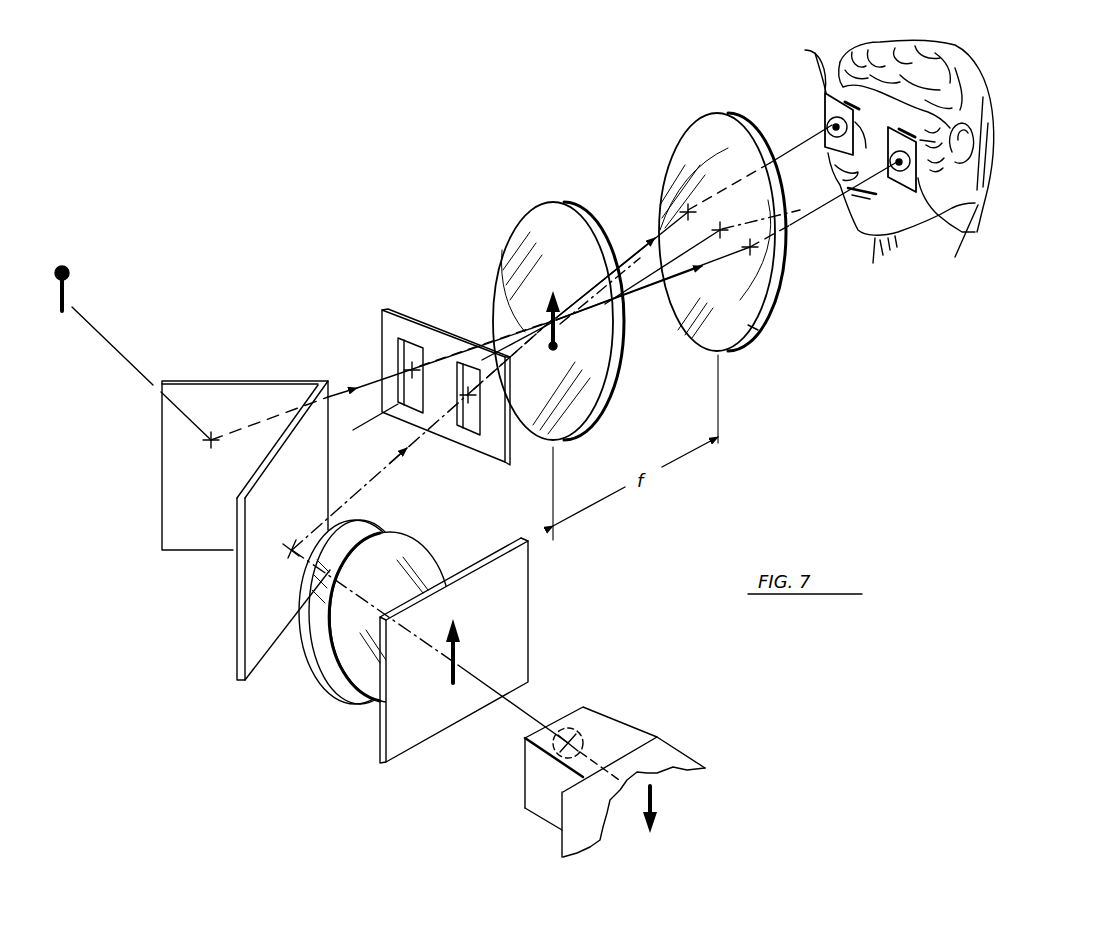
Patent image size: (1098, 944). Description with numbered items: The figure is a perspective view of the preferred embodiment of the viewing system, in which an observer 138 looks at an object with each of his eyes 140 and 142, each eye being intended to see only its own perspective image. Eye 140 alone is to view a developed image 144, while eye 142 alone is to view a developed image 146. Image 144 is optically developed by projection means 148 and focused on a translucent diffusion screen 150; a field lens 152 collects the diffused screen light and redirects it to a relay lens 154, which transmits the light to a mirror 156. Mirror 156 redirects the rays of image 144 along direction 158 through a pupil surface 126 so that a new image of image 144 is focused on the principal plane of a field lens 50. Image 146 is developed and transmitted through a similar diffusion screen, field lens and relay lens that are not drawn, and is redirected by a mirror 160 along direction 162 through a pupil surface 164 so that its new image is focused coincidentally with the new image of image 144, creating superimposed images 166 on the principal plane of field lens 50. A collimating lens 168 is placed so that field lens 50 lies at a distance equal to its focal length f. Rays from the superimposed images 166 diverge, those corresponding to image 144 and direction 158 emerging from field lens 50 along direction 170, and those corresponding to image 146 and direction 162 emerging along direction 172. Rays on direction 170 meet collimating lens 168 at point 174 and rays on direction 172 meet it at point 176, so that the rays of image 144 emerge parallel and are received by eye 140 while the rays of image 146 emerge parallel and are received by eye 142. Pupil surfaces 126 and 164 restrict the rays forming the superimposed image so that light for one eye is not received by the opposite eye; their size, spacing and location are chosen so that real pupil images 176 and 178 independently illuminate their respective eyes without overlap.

The field lens 50 is at (600, 378).
The pupil surface 126 is at (473, 425).
The observer 138 is at (973, 87).
The eye 140 is at (827, 118).
The eye 142 is at (947, 193).
The developed image 144 is at (655, 800).
The developed image 146 is at (66, 287).
The projection means 148 is at (620, 737).
The translucent diffusion screen 150 is at (517, 648).
The field lens 152 is at (417, 558).
The relay lens 154 is at (370, 530).
The mirror 156 is at (262, 660).
The direction 158 is at (382, 470).
The mirror 160 is at (183, 540).
The direction 162 is at (381, 387).
The pupil surface 164 is at (411, 340).
The superimposed images 166 is at (556, 312).
The collimating lens 168 is at (755, 328).
The direction 170 is at (627, 252).
The direction 172 is at (685, 272).
The point 174 is at (688, 210).
The point 176 is at (757, 247).
The real pupil image 178 is at (935, 142).